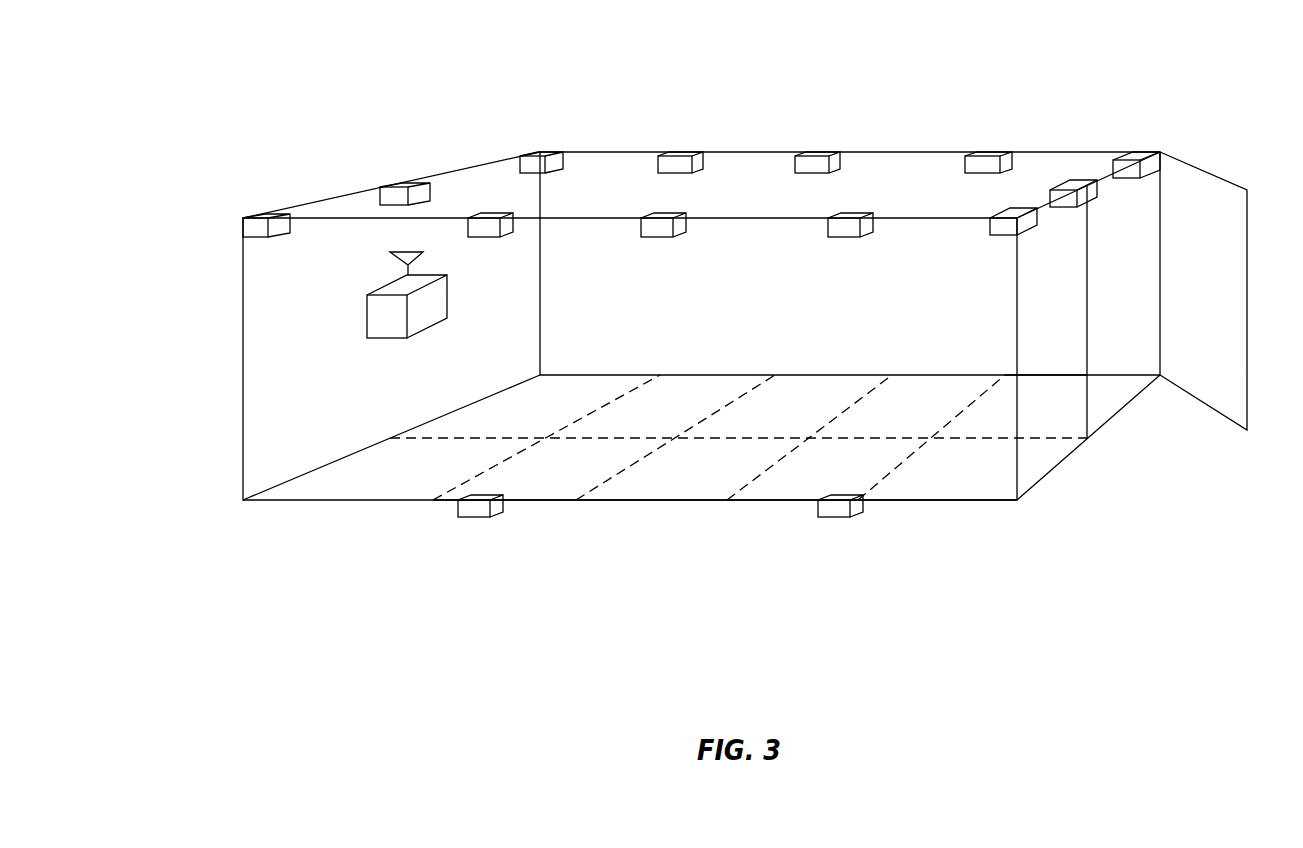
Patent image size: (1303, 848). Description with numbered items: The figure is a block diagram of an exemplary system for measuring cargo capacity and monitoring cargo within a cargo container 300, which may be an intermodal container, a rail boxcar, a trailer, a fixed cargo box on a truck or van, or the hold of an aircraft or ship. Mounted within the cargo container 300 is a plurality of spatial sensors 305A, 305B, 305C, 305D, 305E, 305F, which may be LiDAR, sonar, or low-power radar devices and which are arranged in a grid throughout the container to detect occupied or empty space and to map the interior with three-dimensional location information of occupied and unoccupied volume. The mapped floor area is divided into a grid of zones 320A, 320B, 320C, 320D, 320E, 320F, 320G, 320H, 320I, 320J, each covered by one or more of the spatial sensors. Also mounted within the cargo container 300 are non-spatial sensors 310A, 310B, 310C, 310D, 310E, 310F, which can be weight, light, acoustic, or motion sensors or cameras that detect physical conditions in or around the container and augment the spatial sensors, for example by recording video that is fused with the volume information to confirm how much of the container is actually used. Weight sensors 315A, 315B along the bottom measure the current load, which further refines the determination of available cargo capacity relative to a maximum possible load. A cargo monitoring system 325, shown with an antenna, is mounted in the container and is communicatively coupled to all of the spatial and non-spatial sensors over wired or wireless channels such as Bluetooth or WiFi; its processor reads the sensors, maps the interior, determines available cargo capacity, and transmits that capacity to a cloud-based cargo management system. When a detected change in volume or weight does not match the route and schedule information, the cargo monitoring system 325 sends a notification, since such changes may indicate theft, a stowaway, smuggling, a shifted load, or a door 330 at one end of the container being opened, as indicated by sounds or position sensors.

The cargo container 300 is at (970, 68).
The spatial sensor 305A is at (1140, 158).
The spatial sensor 305B is at (828, 155).
The spatial sensor 305C is at (540, 155).
The spatial sensor 305D is at (255, 217).
The spatial sensor 305E is at (675, 216).
The spatial sensor 305F is at (1003, 236).
The non-spatial sensor 310A is at (1000, 155).
The non-spatial sensor 310B is at (690, 155).
The non-spatial sensor 310C is at (397, 186).
The non-spatial sensor 310D is at (500, 217).
The non-spatial sensor 310E is at (862, 216).
The non-spatial sensor 310F is at (1074, 207).
The weight sensor 315A is at (492, 518).
The weight sensor 315B is at (852, 518).
The zone 320A is at (546, 437).
The zone 320B is at (730, 459).
The zone 320C is at (675, 437).
The zone 320D is at (506, 480).
The zone 320E is at (809, 437).
The zone 320F is at (652, 480).
The zone 320G is at (931, 437).
The zone 320H is at (792, 480).
The zone 320I is at (1046, 396).
The zone 320J is at (937, 480).
The cargo monitoring system 325 is at (407, 295).
The door 330 is at (1203, 291).